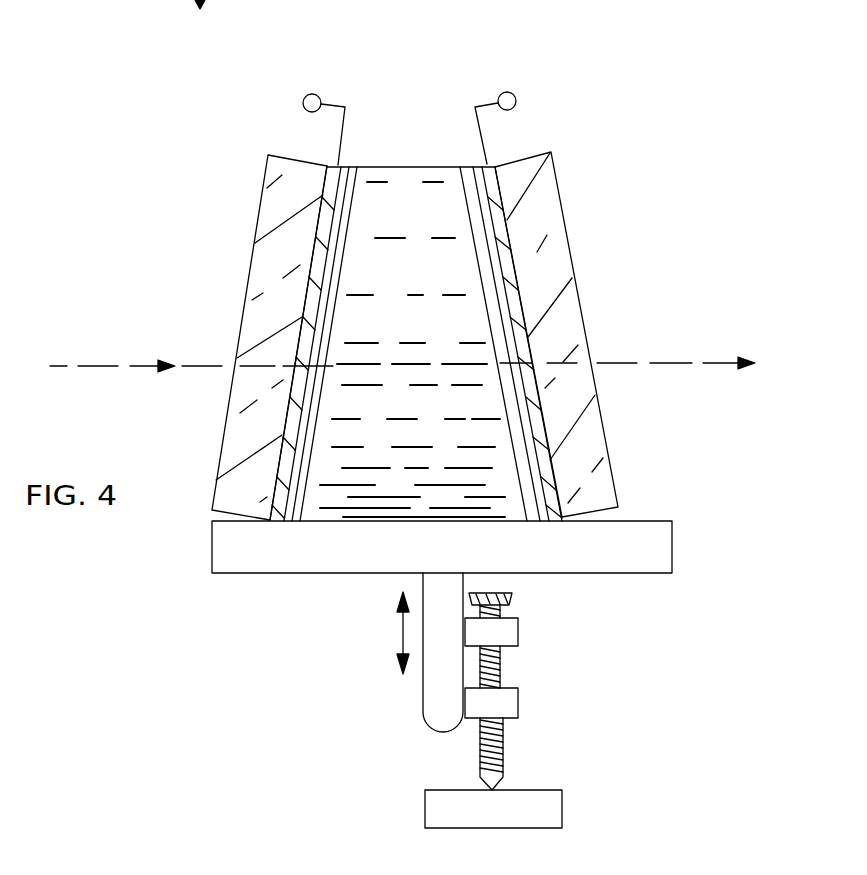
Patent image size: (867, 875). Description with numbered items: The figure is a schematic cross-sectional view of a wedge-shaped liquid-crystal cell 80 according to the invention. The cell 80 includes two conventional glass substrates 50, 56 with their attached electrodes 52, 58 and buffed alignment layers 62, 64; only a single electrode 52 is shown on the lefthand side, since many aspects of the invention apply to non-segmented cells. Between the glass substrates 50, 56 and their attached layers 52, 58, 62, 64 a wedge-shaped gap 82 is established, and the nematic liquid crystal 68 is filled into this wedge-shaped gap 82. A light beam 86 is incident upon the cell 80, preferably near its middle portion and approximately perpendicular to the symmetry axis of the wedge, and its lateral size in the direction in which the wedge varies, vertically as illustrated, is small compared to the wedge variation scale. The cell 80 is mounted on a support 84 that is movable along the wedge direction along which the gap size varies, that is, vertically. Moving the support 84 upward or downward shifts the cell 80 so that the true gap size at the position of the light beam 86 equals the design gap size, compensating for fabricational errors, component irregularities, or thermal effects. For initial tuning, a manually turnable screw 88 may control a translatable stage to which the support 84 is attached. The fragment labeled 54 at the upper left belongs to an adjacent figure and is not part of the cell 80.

The glass substrate 50 is at (270, 162).
The electrode 52 is at (348, 160).
The electrode lead 54 is at (35, 0).
The glass substrate 56 is at (567, 243).
The electrode 58 is at (490, 166).
The buffed alignment layer 62 is at (355, 165).
The buffed alignment layer 64 is at (465, 166).
The nematic liquid crystal 68 is at (398, 198).
The wedge-shaped liquid-crystal cell 80 is at (618, 300).
The wedge-shaped gap 82 is at (433, 157).
The support 84 is at (668, 543).
The light beam 86 is at (112, 366).
The manually turnable screw 88 is at (502, 670).